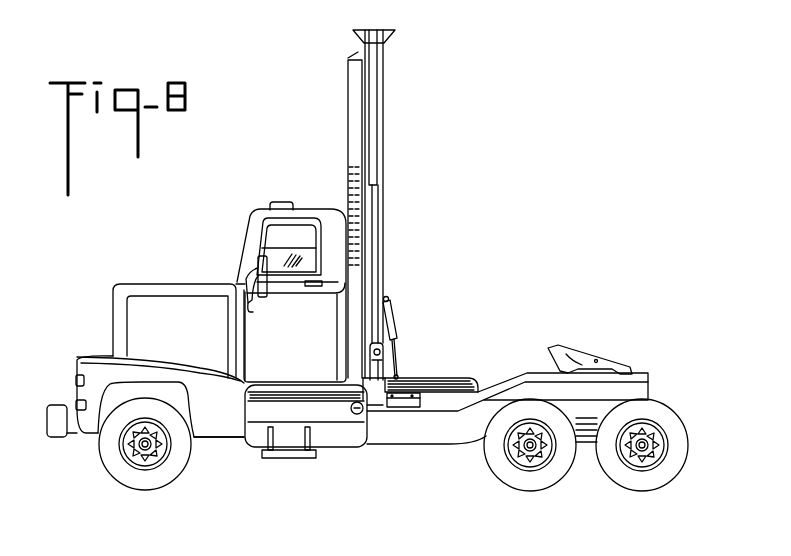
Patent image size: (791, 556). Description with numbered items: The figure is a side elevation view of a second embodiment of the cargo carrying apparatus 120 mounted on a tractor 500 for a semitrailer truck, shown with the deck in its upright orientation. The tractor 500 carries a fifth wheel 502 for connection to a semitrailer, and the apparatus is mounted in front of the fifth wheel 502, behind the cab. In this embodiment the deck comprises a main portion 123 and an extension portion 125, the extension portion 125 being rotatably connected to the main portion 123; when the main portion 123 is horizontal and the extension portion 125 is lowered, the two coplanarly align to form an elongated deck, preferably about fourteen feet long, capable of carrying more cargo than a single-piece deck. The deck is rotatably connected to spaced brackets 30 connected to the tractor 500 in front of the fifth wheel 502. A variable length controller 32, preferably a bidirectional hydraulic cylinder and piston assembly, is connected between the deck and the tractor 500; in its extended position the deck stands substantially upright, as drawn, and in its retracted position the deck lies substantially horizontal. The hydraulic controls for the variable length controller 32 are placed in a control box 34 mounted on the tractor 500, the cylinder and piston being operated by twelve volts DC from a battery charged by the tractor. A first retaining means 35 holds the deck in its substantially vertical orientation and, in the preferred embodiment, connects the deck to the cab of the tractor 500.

The tractor 500 is at (254, 191).
The fifth wheel 502 is at (588, 355).
The cargo carrying apparatus 120 is at (407, 225).
The main portion 123 is at (383, 148).
The extension portion 125 is at (365, 127).
The first retaining means 35 is at (366, 228).
The variable length controller 32 is at (393, 328).
The bracket 30 is at (380, 380).
The control box 34 is at (396, 407).